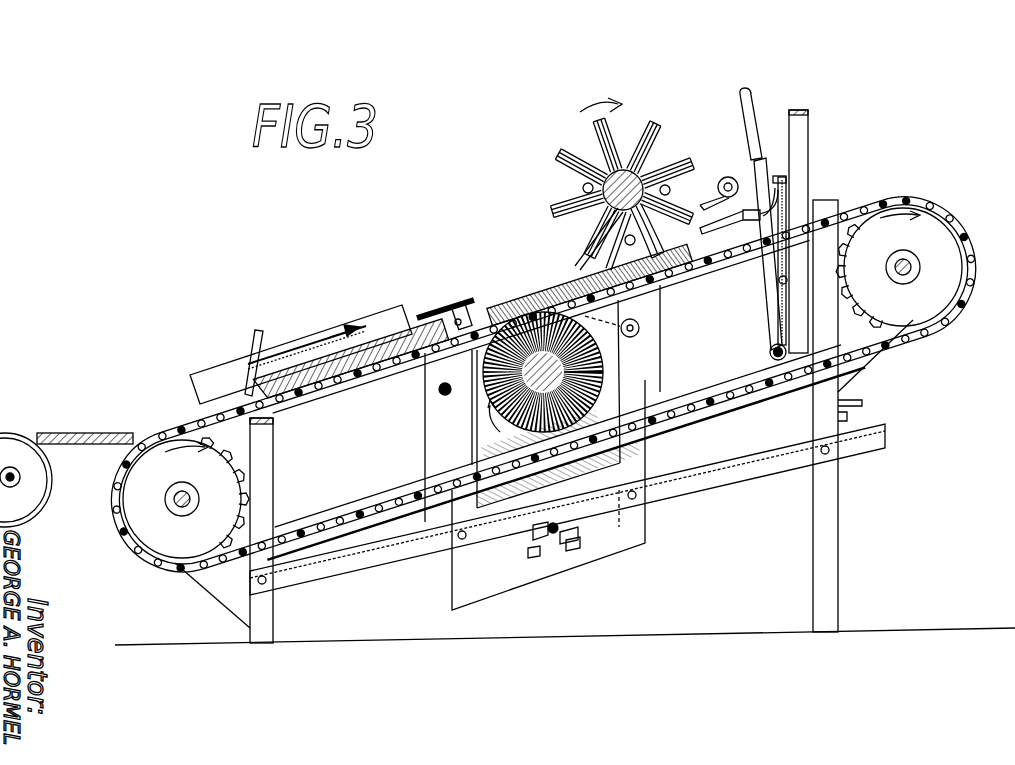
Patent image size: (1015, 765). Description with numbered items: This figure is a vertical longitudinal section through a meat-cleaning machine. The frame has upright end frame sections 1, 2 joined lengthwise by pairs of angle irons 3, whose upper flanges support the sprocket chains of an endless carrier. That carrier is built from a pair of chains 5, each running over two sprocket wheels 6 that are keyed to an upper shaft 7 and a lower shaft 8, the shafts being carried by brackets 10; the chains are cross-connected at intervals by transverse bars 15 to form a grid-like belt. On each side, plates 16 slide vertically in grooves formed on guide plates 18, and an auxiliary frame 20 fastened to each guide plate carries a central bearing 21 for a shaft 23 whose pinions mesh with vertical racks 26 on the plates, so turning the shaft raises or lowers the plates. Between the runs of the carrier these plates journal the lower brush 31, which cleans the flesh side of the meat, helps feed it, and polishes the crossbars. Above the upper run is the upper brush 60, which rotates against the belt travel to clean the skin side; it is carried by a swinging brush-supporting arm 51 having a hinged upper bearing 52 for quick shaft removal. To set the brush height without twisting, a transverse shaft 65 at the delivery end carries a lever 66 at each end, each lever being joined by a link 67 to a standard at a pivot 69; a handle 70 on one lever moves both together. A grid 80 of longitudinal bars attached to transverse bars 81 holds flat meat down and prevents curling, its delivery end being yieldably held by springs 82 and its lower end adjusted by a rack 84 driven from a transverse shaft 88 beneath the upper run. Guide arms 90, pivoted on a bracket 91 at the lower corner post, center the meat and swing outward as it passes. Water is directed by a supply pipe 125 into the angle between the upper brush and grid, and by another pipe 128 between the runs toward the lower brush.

The end frame section 1 is at (833, 528).
The end frame section 2 is at (268, 613).
The angle irons 3 is at (338, 392).
The chains 5 is at (798, 110).
The sprocket wheels 6 is at (135, 503).
The upper shaft 7 is at (920, 265).
The lower shaft 8 is at (199, 498).
The brackets 10 is at (205, 590).
The bars 15 is at (128, 533).
The plates 16 is at (603, 457).
The guide plates 18 is at (425, 434).
The auxiliary frame 20 is at (537, 577).
The bearing 21 is at (559, 540).
The shaft 23 is at (570, 527).
The vertical racks 26 is at (530, 533).
The lower brush 31 is at (602, 387).
The brush-supporting arm 51 is at (585, 262).
The upper bearing 52 is at (605, 168).
The upper brush 60 is at (572, 160).
The shaft 65 is at (780, 362).
The lever 66 is at (769, 295).
The link 67 is at (752, 210).
The pivot 69 is at (622, 240).
The handle 70 is at (745, 90).
The grid 80 is at (433, 312).
The transverse bars 81 is at (786, 180).
The springs 82 is at (788, 213).
The rack 84 is at (473, 312).
The transverse shaft 88 is at (441, 393).
The guide arms 90 is at (330, 338).
The bracket 91 is at (259, 330).
The supply pipe 125 is at (726, 177).
The pipe 128 is at (642, 330).